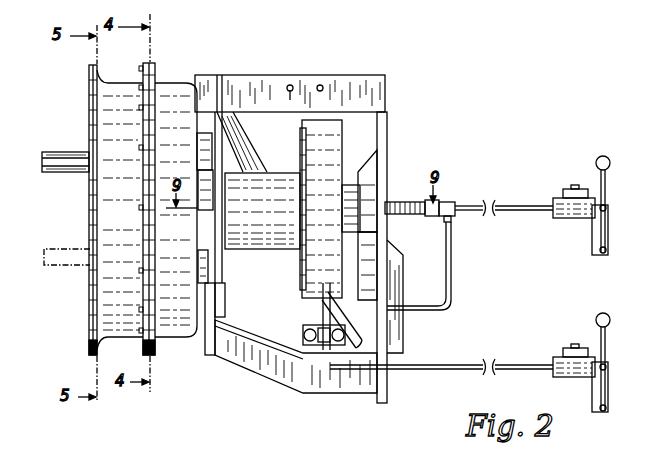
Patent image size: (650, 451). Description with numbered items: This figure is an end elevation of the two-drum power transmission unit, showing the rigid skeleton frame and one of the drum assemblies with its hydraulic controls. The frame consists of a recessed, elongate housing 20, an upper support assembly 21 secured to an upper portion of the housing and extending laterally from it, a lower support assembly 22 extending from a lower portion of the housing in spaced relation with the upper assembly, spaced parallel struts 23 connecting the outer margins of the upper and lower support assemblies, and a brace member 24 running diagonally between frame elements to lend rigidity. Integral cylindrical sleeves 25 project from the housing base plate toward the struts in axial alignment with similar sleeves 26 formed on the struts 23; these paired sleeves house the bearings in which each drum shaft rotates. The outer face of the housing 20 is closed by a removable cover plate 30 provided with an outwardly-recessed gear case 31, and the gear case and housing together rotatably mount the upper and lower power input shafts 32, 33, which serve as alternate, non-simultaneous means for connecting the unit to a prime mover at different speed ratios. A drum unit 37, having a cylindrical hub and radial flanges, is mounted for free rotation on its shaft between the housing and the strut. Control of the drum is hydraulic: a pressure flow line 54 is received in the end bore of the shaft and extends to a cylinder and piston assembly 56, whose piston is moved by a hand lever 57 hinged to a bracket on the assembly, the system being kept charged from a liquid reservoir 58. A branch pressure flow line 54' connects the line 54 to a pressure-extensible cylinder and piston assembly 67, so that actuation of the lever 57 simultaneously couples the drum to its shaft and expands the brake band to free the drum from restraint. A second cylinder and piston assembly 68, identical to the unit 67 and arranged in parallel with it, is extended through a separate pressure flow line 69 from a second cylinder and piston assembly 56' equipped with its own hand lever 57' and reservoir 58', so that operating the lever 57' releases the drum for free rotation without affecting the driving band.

The housing 20 is at (176, 210).
The upper support assembly 21 is at (250, 88).
The lower support assembly 22 is at (285, 378).
The strut 23 is at (385, 153).
The brace member 24 is at (260, 157).
The cylindrical sleeve 25 is at (216, 240).
The sleeve 26 is at (373, 205).
The cover plate 30 is at (148, 63).
The gear case 31 is at (116, 210).
The upper power input shaft 32 is at (53, 158).
The lower power input shaft 33 is at (66, 258).
The drum unit 37 is at (289, 250).
The pressure flow line 54 is at (483, 225).
The branch pressure flow line 54' is at (419, 276).
The cylinder and piston assembly 56 is at (580, 226).
The cylinder and piston assembly 56' is at (564, 376).
The hand lever 57 is at (616, 194).
The hand lever 57' is at (619, 357).
The liquid reservoir 58 is at (574, 182).
The reservoir 58' is at (575, 341).
The cylinder and piston assembly 67 is at (348, 316).
The second cylinder and piston assembly 68 is at (305, 333).
The pressure flow line 69 is at (456, 375).